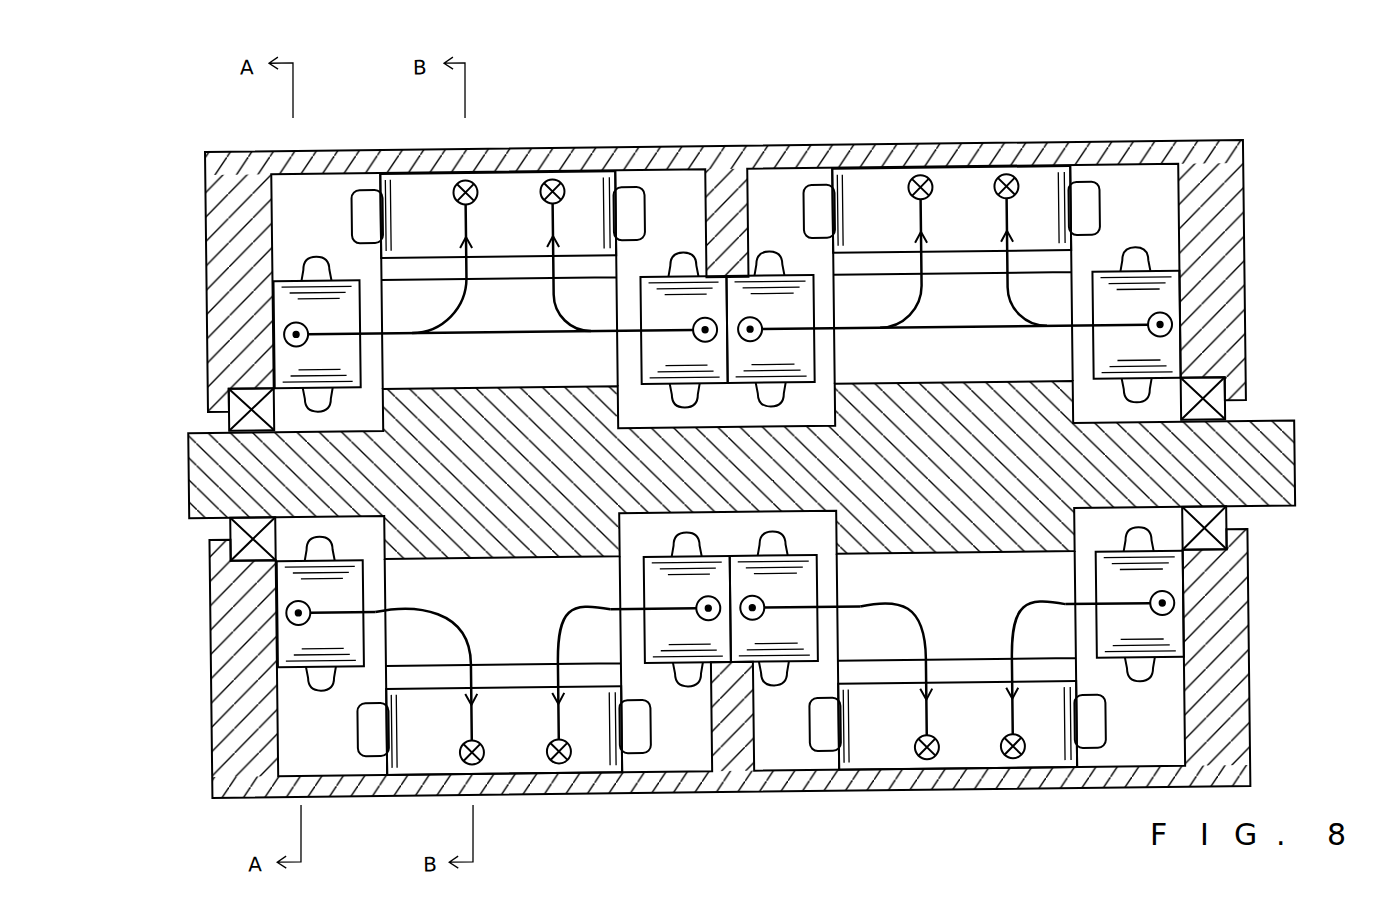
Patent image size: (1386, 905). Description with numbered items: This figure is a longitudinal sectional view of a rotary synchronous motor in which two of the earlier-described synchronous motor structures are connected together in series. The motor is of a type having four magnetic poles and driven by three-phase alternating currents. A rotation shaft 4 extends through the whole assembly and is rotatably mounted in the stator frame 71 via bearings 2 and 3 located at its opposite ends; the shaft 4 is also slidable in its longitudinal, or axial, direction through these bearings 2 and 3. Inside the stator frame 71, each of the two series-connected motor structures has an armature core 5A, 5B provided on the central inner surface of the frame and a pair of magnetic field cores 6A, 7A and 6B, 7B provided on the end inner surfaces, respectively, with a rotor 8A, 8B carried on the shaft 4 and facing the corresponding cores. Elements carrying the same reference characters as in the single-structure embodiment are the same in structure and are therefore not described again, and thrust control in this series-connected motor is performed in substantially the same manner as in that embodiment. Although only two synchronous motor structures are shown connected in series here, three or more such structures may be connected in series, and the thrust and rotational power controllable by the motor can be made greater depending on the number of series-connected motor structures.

The bearing 2 is at (250, 419).
The bearing 3 is at (1200, 420).
The rotation shaft 4 is at (1287, 482).
The armature core 5A is at (423, 194).
The armature core 5B is at (878, 195).
The magnetic field core 6A is at (287, 376).
The magnetic field core 6B is at (794, 297).
The magnetic field core 7A is at (659, 295).
The magnetic field core 7B is at (1113, 300).
The rotor 8A is at (511, 323).
The rotor 8B is at (963, 328).
The stator frame 71 is at (1223, 168).